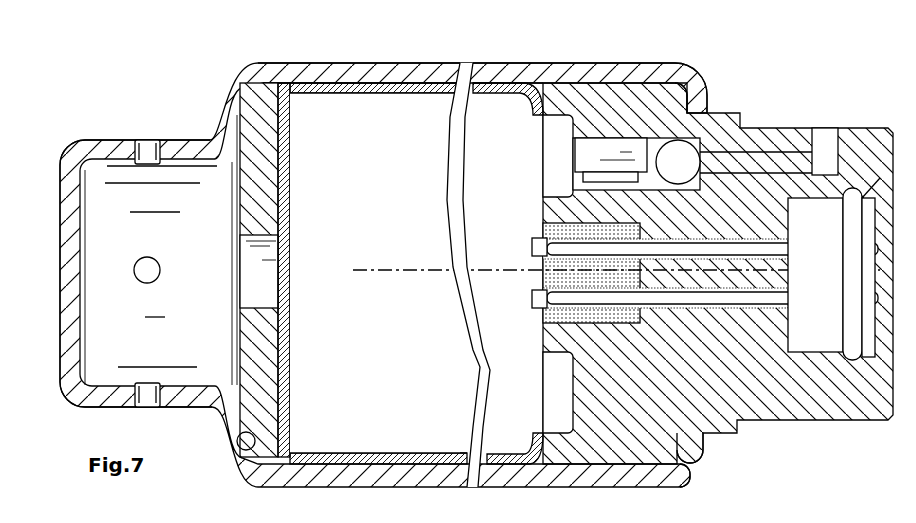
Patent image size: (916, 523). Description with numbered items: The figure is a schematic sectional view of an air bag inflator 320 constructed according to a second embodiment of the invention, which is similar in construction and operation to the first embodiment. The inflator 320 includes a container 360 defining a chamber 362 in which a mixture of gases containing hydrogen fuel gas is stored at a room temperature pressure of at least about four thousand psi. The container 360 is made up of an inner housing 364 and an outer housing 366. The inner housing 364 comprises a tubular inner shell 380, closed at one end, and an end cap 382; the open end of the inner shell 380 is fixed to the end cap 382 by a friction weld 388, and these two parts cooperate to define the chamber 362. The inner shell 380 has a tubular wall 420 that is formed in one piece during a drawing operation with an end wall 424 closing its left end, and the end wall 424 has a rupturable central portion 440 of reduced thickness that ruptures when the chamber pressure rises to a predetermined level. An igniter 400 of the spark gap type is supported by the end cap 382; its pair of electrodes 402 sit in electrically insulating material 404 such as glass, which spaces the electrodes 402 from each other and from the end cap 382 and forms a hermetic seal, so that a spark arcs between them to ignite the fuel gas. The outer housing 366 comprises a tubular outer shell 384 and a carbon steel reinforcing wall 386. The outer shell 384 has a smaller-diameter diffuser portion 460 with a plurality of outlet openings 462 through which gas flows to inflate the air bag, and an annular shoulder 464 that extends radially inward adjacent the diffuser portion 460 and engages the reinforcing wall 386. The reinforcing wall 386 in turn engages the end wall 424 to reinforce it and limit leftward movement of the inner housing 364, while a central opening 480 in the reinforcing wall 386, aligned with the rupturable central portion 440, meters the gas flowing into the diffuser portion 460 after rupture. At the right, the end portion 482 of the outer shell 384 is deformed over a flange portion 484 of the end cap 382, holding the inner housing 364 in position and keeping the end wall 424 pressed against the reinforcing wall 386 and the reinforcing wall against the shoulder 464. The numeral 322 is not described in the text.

The inflator 320 is at (733, 72).
The valve member 322 is at (510, 97).
The container 360 is at (715, 106).
The chamber 362 is at (374, 157).
The inner housing 364 is at (538, 88).
The outer housing 366 is at (651, 60).
The inner shell 380 is at (344, 450).
The end cap 382 is at (843, 408).
The outer shell 384 is at (402, 70).
The reinforcing wall 386 is at (258, 118).
The friction weld 388 is at (533, 450).
The igniter 400 is at (526, 267).
The electrodes 402 is at (530, 240).
The insulating material 404 is at (527, 283).
The tubular wall 420 is at (388, 91).
The end wall 424 is at (281, 383).
The rupturable central portion 440 is at (281, 280).
The diffuser portion 460 is at (110, 133).
The outlet openings 462 is at (147, 141).
The annular shoulder 464 is at (245, 450).
The central opening 480 is at (255, 303).
The end portion 482 is at (698, 448).
The flange portion 484 is at (684, 478).